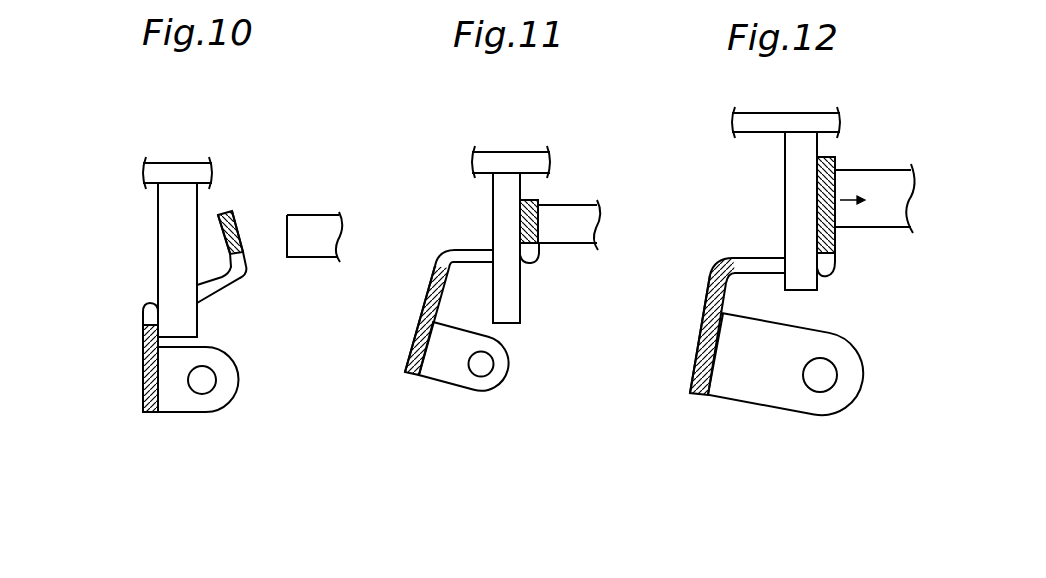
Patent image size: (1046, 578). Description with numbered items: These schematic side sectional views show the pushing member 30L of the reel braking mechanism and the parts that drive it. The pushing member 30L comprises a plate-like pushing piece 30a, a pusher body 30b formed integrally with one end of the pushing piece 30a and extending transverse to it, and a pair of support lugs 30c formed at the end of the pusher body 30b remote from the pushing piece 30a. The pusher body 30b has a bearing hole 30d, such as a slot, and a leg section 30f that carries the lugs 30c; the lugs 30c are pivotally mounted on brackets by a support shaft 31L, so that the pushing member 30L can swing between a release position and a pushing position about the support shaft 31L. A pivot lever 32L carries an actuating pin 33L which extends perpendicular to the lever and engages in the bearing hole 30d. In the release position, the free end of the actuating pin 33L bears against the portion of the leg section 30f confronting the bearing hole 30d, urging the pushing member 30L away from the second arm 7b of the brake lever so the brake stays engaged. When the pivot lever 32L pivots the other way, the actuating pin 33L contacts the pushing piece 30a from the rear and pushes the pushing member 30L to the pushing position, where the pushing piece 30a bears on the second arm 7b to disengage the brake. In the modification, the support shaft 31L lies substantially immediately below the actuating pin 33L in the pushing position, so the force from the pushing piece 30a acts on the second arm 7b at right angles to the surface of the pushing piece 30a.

In FIG. 10, the second arm 7b is at (315, 220).
In FIG. 11, the second arm 7b is at (571, 212).
In FIG. 12, the second arm 7b is at (875, 198).
In FIG. 10, the pushing member 30L is at (188, 294).
In FIG. 11, the pushing member 30L is at (459, 330).
In FIG. 12, the pushing member 30L is at (750, 278).
In FIG. 10, the pushing piece 30a is at (228, 212).
In FIG. 11, the pushing piece 30a is at (539, 260).
In FIG. 12, the pushing piece 30a is at (836, 183).
In FIG. 10, the pusher body 30b is at (141, 328).
In FIG. 11, the pusher body 30b is at (422, 291).
In FIG. 12, the pusher body 30b is at (757, 246).
In FIG. 10, the support lugs 30c is at (170, 405).
In FIG. 11, the support lugs 30c is at (442, 368).
In FIG. 12, the support lugs 30c is at (745, 393).
In FIG. 10, the bearing hole 30d is at (225, 283).
In FIG. 11, the bearing hole 30d is at (457, 249).
In FIG. 12, the bearing hole 30d is at (747, 262).
In FIG. 10, the leg section 30f is at (143, 357).
In FIG. 11, the leg section 30f is at (410, 342).
In FIG. 12, the leg section 30f is at (703, 333).
In FIG. 10, the support shaft 31L is at (198, 388).
In FIG. 11, the support shaft 31L is at (480, 368).
In FIG. 12, the support shaft 31L is at (815, 386).
In FIG. 10, the pivot lever 32L is at (173, 168).
In FIG. 11, the pivot lever 32L is at (500, 158).
In FIG. 12, the pivot lever 32L is at (778, 120).
In FIG. 10, the actuating pin 33L is at (165, 248).
In FIG. 11, the actuating pin 33L is at (497, 213).
In FIG. 12, the actuating pin 33L is at (790, 167).